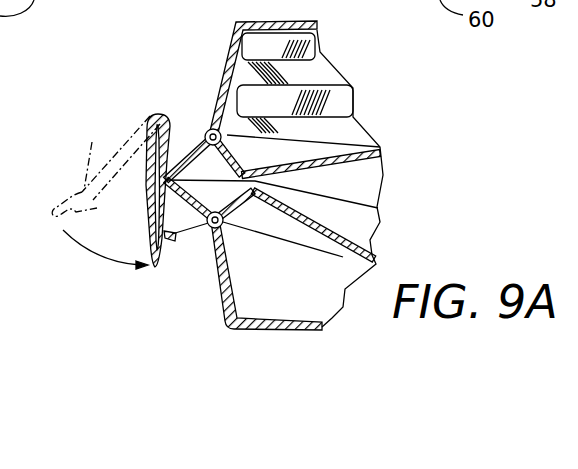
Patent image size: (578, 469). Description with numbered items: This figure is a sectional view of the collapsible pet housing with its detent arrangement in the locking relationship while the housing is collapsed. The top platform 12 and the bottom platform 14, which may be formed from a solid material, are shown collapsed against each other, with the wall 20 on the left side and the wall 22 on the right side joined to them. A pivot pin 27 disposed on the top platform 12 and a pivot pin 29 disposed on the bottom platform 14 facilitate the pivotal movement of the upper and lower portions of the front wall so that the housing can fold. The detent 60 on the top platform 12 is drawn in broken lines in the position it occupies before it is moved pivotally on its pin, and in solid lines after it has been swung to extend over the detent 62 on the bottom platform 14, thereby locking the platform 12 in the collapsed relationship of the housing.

The top platform 12 is at (300, 19).
The bottom platform 14 is at (303, 329).
The wall on the left side 20 is at (330, 103).
The wall on the right side 22 is at (307, 53).
The pivot pin 27 is at (209, 131).
The pivot pin 29 is at (226, 228).
The detent 60 is at (140, 178).
The detent 62 is at (168, 207).